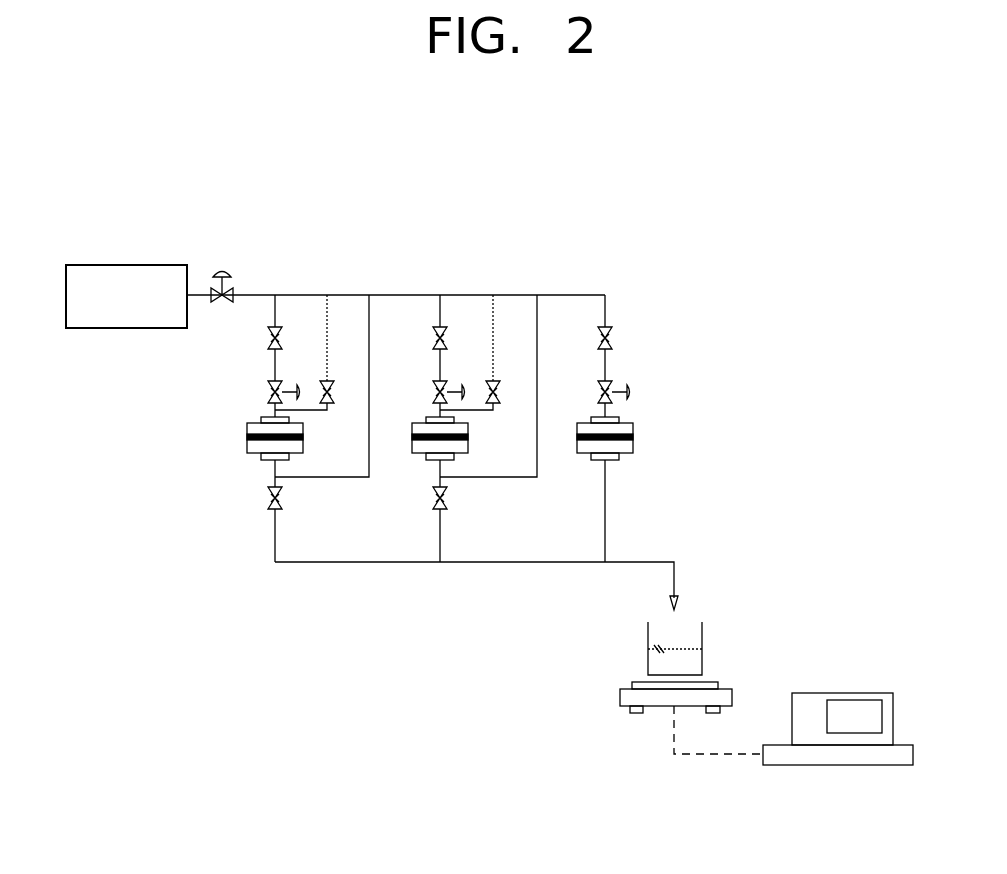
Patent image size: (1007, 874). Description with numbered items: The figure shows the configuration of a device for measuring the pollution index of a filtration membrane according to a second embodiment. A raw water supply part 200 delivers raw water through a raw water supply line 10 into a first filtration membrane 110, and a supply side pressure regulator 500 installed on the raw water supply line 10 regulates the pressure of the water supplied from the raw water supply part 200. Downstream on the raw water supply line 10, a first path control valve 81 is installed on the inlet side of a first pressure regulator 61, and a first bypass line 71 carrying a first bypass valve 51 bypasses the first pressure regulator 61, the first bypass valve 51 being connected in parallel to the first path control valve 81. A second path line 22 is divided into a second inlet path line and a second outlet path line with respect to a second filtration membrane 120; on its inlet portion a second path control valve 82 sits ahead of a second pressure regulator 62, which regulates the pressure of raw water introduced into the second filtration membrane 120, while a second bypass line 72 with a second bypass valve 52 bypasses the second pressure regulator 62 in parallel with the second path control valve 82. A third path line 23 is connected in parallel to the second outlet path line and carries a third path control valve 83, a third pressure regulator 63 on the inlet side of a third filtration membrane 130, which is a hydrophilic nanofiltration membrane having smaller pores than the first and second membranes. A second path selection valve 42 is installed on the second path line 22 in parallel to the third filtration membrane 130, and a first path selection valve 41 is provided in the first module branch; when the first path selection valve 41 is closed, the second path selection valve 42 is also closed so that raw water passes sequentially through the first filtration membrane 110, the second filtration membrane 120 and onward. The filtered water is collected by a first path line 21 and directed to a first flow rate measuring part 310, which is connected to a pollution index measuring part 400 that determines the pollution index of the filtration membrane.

The raw water supply part 200 is at (120, 265).
The supply side pressure regulator 500 is at (223, 268).
The raw water supply line 10 is at (262, 295).
The first path control valve 81 is at (278, 327).
The first pressure regulator 61 is at (282, 385).
The first bypass line 71 is at (327, 295).
The first bypass valve 51 is at (366, 295).
The first filtration membrane 110 is at (247, 437).
The first path selection valve 41 is at (268, 498).
The second path line 22 is at (422, 295).
The second path control valve 82 is at (444, 327).
The second pressure regulator 62 is at (447, 385).
The second bypass line 72 is at (495, 295).
The second bypass valve 52 is at (534, 295).
The second filtration membrane 120 is at (412, 455).
The second path selection valve 42 is at (447, 498).
The third path line 23 is at (588, 295).
The third path control valve 83 is at (608, 327).
The third pressure regulator 63 is at (607, 385).
The third filtration membrane 130 is at (633, 437).
The first path line 21 is at (348, 562).
The first flow rate measuring part 310 is at (603, 709).
The pollution index measuring part 400 is at (848, 766).